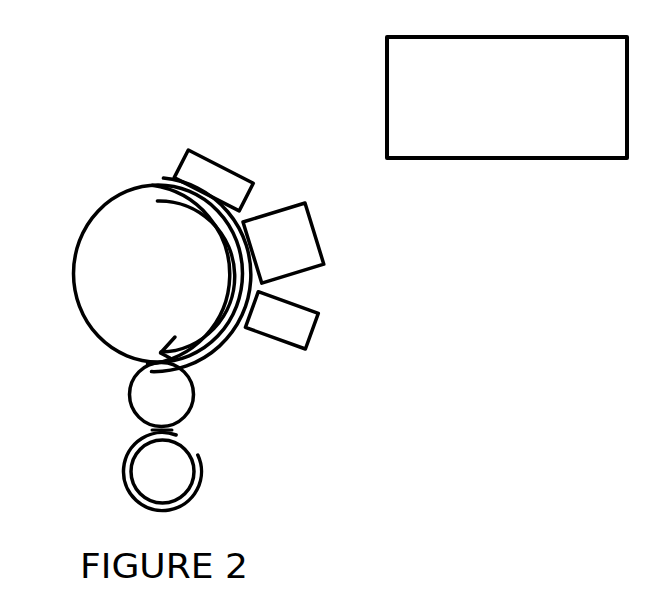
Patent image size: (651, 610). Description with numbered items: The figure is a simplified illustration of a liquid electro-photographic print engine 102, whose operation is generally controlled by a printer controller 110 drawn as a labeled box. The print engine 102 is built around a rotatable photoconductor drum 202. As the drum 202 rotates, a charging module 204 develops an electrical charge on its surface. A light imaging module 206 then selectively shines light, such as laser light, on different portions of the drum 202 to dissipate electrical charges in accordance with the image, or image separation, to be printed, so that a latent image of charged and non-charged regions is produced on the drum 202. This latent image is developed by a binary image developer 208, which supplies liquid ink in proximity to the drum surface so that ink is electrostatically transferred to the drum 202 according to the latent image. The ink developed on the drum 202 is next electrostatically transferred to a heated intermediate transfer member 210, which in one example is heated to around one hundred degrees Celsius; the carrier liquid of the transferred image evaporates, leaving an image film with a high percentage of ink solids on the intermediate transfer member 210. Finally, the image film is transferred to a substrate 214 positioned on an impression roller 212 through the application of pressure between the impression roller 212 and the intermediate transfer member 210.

The print engine 102 is at (95, 127).
The printer controller 110 is at (385, 98).
The photoconductor drum 202 is at (74, 275).
The charging module 204 is at (206, 157).
The light imaging module 206 is at (283, 207).
The binary image developer 208 is at (313, 334).
The intermediate transfer member 210 is at (132, 392).
The impression roller 212 is at (183, 441).
The substrate 214 is at (201, 480).